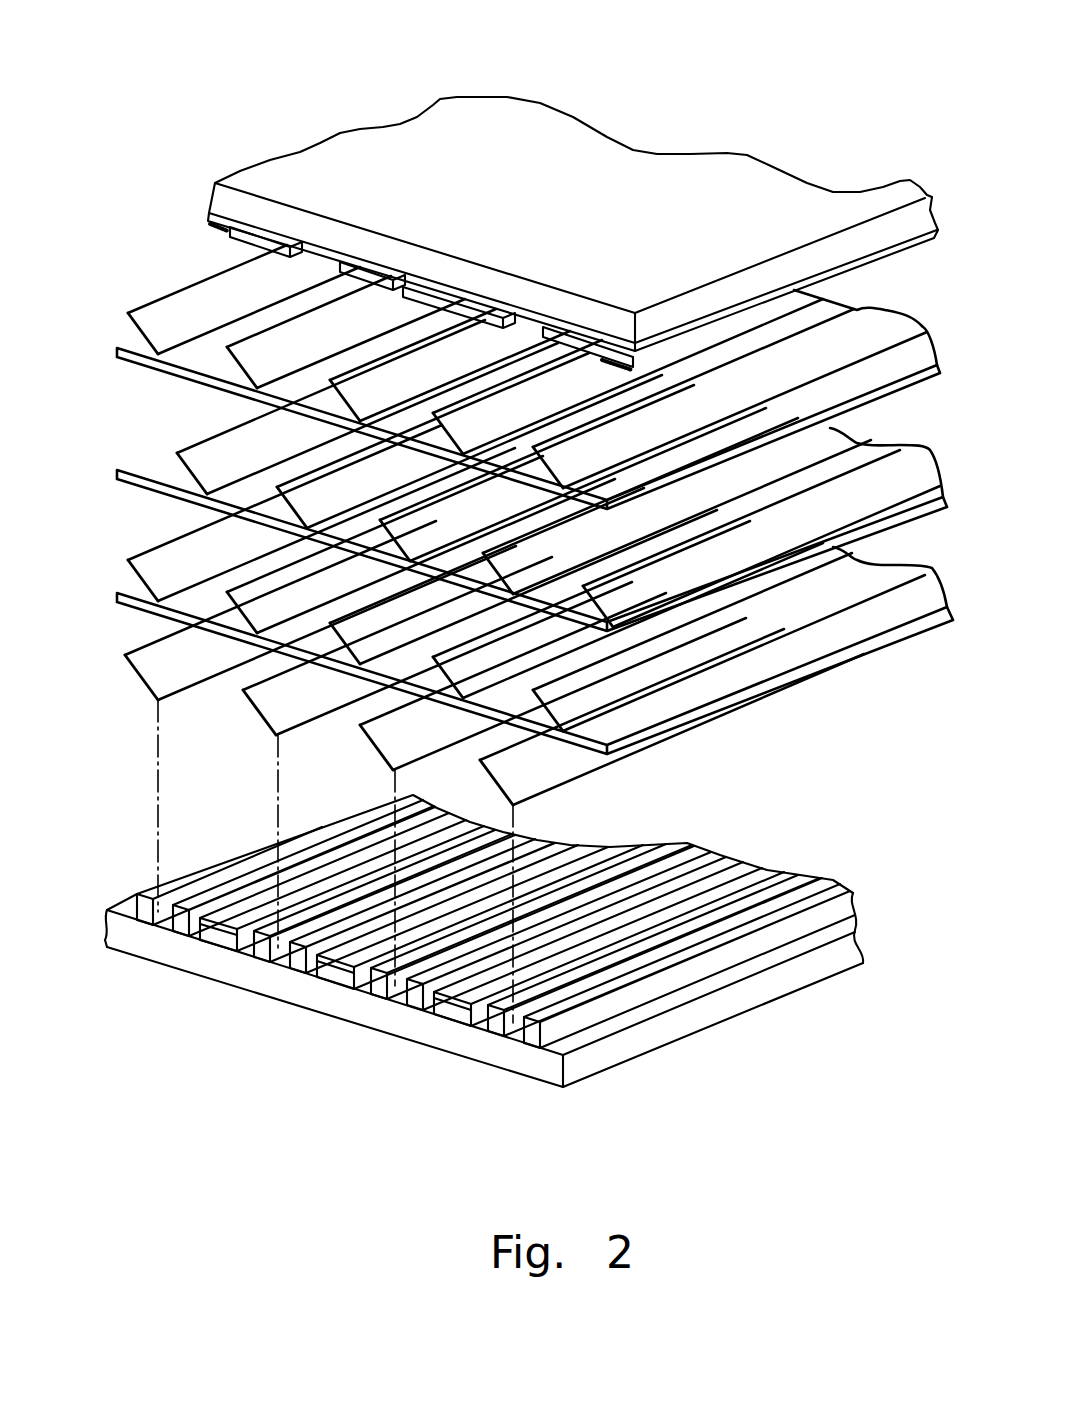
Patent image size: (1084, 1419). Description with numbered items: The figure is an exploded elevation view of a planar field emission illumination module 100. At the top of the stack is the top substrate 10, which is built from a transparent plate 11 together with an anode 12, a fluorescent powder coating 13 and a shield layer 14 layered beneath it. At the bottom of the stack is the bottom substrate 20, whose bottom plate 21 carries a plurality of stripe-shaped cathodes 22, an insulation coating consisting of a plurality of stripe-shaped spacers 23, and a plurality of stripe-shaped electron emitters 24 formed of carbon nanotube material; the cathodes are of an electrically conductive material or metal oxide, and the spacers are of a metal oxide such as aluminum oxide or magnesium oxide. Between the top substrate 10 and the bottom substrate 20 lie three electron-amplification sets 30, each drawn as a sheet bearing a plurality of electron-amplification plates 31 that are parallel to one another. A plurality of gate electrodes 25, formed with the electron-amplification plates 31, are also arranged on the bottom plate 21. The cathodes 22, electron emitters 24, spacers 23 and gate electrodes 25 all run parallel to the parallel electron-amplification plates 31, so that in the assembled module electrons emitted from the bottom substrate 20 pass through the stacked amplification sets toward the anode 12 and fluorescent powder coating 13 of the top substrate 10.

The planar field emission illumination module 100 is at (230, 70).
The top substrate 10 is at (132, 175).
The transparent plate 11 is at (217, 194).
The anode 12 is at (214, 221).
The fluorescent powder coating 13 is at (292, 277).
The shield layer 14 is at (247, 237).
The bottom substrate 20 is at (524, 1134).
The bottom plate 21 is at (523, 1060).
The stripe-shaped cathode 22 is at (433, 1012).
The stripe-shaped spacer 23 is at (380, 1000).
The stripe-shaped electron emitter 24 is at (457, 1007).
The gate electrode 25 is at (143, 679).
The electron-amplification set 30 is at (112, 365).
The electron-amplification plate 31 is at (140, 317).